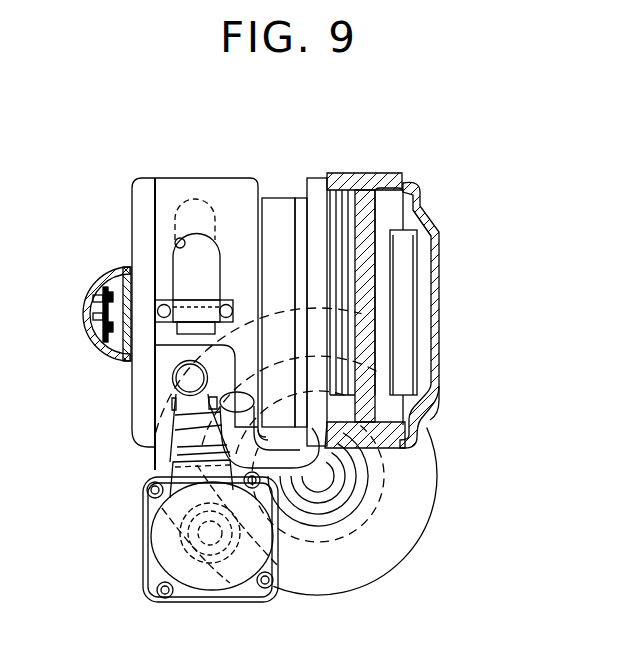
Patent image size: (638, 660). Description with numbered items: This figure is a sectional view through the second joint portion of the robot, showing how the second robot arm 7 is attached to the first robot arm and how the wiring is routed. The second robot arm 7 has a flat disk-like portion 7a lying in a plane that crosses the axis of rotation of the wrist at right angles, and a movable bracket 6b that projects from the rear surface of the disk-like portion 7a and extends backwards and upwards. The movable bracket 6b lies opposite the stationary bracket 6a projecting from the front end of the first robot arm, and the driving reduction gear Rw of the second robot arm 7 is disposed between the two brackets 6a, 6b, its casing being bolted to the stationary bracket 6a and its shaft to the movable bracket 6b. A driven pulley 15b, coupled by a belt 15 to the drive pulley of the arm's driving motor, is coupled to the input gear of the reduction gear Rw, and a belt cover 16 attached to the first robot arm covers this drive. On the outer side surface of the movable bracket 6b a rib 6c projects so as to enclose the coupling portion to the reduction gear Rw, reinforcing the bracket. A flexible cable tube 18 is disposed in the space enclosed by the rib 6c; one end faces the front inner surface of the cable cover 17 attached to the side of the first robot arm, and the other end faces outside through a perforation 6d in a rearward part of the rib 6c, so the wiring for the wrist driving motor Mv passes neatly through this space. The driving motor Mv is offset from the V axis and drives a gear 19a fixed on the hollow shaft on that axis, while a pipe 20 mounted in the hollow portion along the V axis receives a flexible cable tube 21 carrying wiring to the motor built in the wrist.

The stationary bracket 6a is at (377, 172).
The movable bracket 6b is at (241, 186).
The rib 6c is at (168, 178).
The perforation 6d is at (177, 243).
The second robot arm 7 is at (443, 439).
The disk-like portion 7a is at (419, 528).
The belt 15 is at (413, 345).
The driven pulley 15b is at (436, 232).
The belt cover 16 is at (433, 257).
The cable cover 17 is at (90, 298).
The flexible cable tube 18 is at (180, 267).
The gear 19a is at (387, 476).
The pipe 20 is at (356, 527).
The flexible cable tube 21 is at (282, 487).
The driving motor Mv is at (145, 513).
The driving reduction gear Rw is at (283, 207).